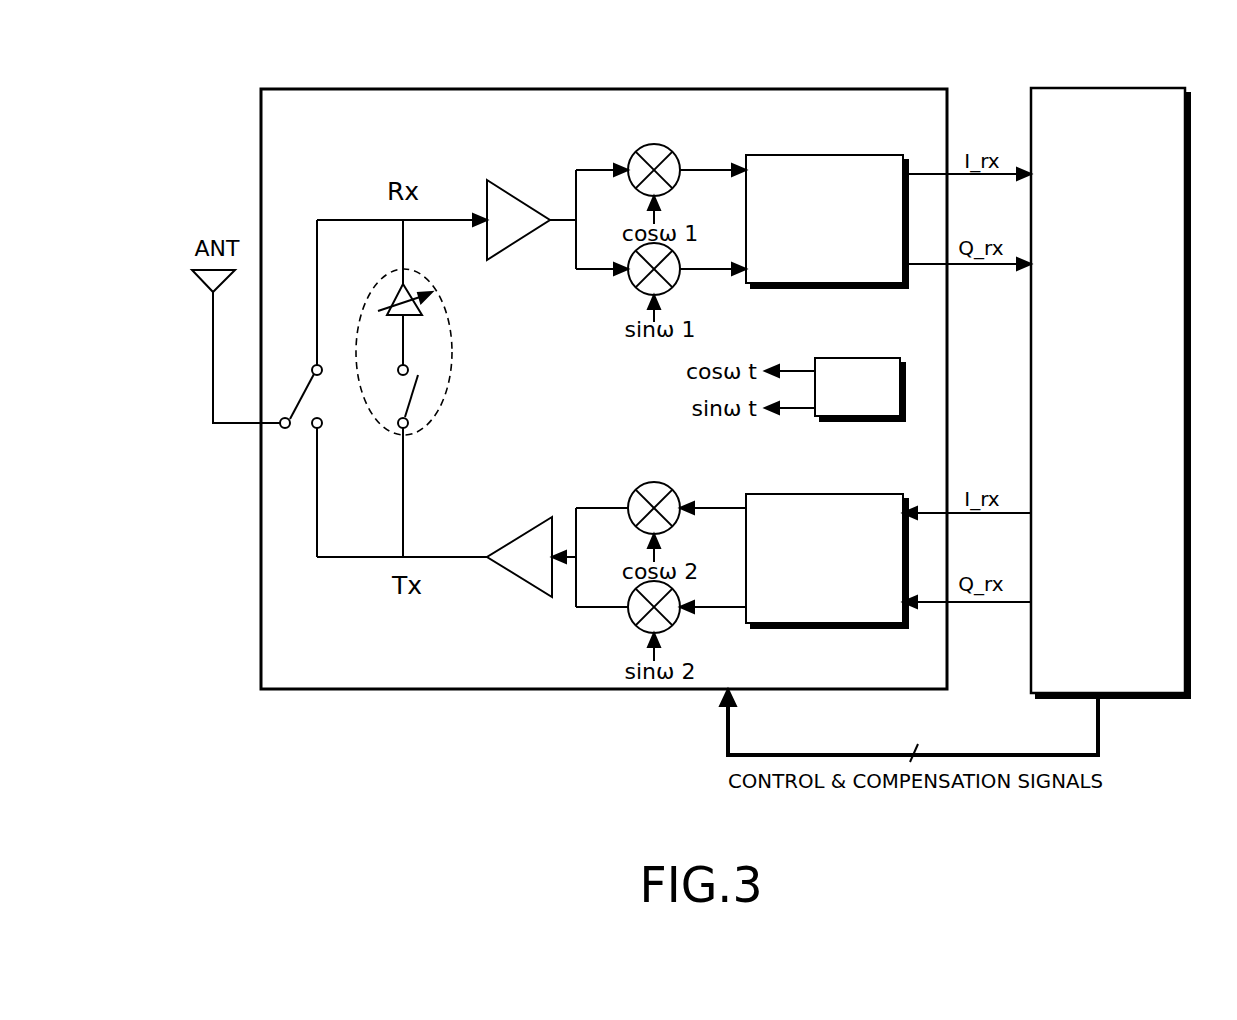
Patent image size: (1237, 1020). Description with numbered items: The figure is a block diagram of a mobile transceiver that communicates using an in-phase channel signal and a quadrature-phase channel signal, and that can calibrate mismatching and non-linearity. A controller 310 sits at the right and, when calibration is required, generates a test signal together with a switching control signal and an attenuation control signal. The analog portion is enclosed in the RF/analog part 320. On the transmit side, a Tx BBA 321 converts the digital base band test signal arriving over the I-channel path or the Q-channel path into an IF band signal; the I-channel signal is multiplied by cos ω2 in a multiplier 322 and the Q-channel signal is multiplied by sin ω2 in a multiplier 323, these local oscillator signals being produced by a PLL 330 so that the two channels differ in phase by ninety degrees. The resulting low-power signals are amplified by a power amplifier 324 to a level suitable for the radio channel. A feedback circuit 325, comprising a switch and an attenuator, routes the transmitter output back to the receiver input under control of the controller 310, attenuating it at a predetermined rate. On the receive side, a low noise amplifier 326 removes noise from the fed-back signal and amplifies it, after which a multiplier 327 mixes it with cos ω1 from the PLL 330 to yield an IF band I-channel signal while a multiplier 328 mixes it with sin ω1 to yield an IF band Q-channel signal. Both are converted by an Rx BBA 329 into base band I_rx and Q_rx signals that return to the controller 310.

The controller 310 is at (1087, 87).
The RF/analog part 320 is at (603, 89).
The transmission BBA (Tx BBA) 321 is at (837, 492).
The multiplier 322 is at (655, 482).
The multiplier 323 is at (677, 622).
The power amplifier (PA) 324 is at (520, 537).
The feedback circuit 325 is at (422, 277).
The low noise amplifier (LNA) 326 is at (517, 198).
The multiplier 327 is at (655, 143).
The multiplier 328 is at (677, 282).
The reception BBA (Rx BBA) 329 is at (835, 153).
The phase locked loop (PLL) 330 is at (852, 358).